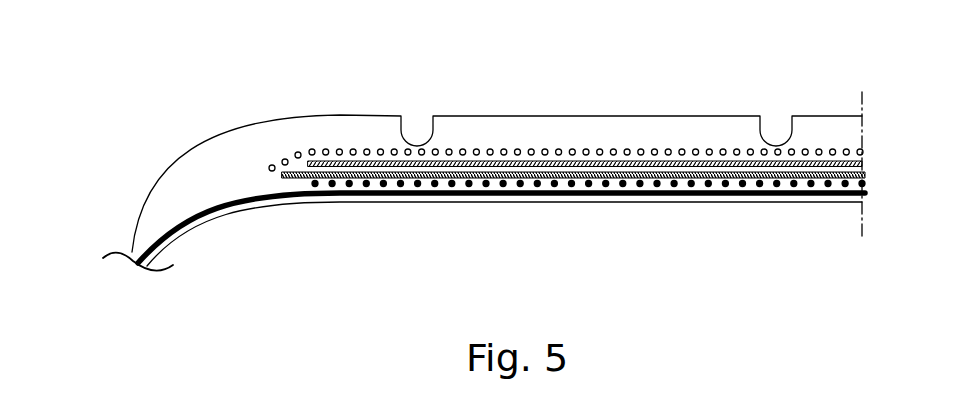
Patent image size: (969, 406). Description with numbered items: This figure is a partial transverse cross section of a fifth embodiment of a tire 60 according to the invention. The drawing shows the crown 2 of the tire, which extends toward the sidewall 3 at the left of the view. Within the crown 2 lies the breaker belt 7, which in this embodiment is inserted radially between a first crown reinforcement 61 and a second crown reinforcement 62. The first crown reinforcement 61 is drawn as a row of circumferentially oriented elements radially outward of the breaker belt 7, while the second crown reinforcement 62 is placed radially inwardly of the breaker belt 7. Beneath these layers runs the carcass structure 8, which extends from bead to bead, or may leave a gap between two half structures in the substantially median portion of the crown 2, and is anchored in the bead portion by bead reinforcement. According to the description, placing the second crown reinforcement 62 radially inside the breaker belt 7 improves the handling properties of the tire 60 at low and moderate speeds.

The tire 60 is at (237, 92).
The crown 2 is at (543, 135).
The first crown reinforcement 61 is at (747, 150).
The breaker belt 7 is at (540, 168).
The second crown reinforcement 62 is at (750, 180).
The carcass structure 8 is at (243, 202).
The sidewall 3 is at (132, 250).